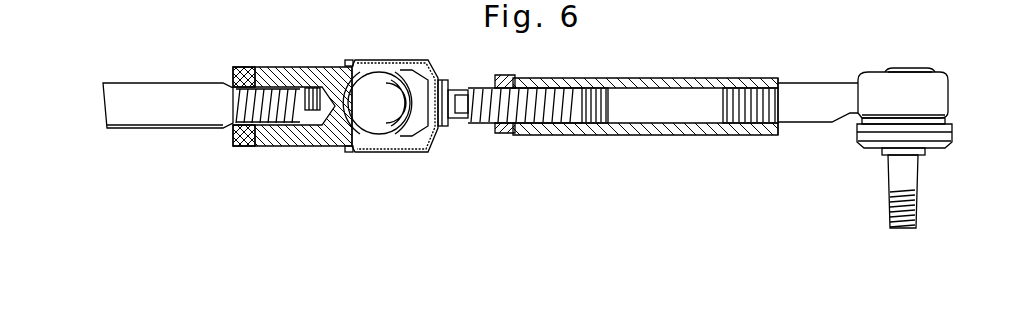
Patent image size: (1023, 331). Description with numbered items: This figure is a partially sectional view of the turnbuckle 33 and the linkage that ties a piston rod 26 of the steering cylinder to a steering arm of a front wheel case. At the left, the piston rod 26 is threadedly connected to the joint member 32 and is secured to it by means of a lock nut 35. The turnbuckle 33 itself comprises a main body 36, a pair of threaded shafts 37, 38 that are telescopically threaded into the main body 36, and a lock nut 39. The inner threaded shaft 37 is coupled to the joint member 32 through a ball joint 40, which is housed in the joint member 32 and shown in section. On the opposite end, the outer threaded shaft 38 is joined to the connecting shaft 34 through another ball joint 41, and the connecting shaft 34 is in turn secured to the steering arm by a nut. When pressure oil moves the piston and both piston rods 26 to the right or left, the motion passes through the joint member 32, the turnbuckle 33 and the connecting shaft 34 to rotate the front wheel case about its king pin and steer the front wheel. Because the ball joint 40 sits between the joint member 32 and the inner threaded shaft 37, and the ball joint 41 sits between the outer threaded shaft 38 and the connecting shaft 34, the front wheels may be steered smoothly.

The piston rod 26 is at (155, 118).
The joint member 32 is at (320, 140).
The turnbuckle 33 is at (678, 142).
The connecting shaft 34 is at (908, 172).
The lock nut 35 is at (245, 140).
The main body 36 is at (635, 130).
The inner threaded shaft 37 is at (535, 133).
The outer threaded shaft 38 is at (757, 133).
The lock nut 39 is at (497, 135).
The ball joint 40 is at (383, 118).
The ball joint 41 is at (911, 72).